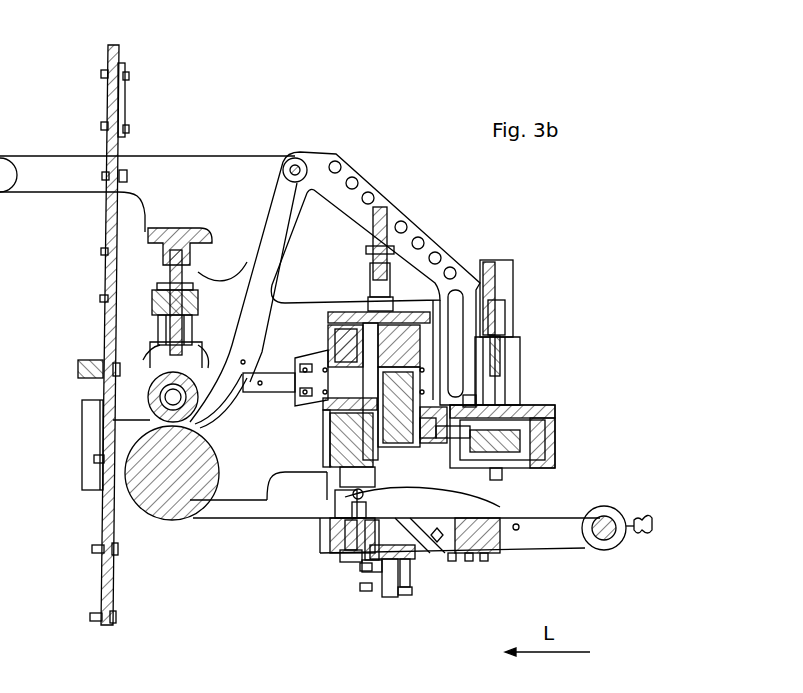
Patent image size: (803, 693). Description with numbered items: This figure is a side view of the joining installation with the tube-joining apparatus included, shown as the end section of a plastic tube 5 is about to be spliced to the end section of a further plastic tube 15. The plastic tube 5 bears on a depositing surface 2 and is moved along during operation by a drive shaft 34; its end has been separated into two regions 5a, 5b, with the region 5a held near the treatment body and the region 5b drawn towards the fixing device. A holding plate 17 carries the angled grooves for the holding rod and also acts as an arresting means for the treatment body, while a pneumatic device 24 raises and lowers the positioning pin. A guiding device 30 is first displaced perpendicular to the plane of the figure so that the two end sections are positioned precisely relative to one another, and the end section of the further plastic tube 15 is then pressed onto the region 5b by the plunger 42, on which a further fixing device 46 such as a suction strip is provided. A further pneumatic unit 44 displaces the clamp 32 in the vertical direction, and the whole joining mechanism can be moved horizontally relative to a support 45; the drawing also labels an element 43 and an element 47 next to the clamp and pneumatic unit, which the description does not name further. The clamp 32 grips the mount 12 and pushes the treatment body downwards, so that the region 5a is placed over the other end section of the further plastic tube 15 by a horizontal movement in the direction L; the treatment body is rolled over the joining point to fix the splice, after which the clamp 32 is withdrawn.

The guiding device 30 is at (366, 156).
The further pneumatic unit 44 is at (373, 323).
The support 45 is at (287, 370).
The clamping block 43 is at (330, 438).
The further plastic tube 15 is at (266, 498).
The cylinder 47 is at (484, 282).
The further fixing device 46 is at (470, 395).
The clamp 32 is at (530, 418).
The plunger 42 is at (383, 487).
The depositing surface 2 is at (538, 524).
The plastic tube 5 is at (468, 548).
The holding plate 17 is at (409, 548).
The pneumatic device 24 is at (389, 572).
The region of the plastic tube 5a is at (356, 512).
The region of the plastic tube 5b is at (352, 524).
The mount 12 is at (360, 530).
The drive shaft 34 is at (172, 502).